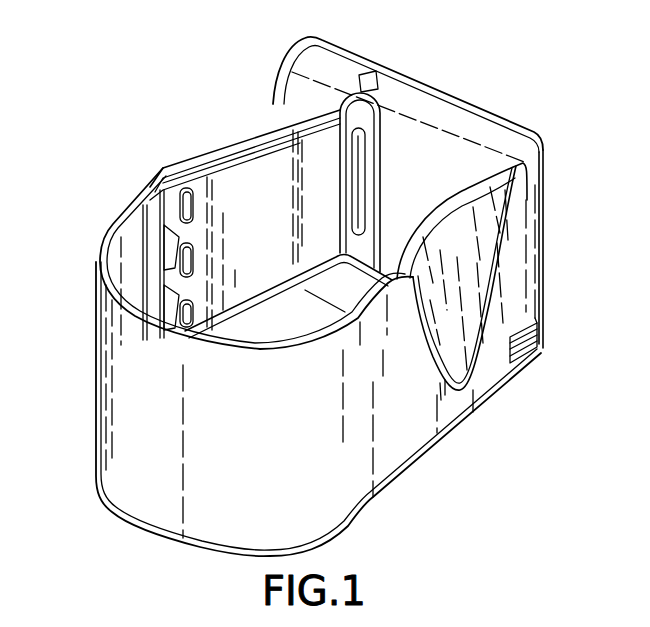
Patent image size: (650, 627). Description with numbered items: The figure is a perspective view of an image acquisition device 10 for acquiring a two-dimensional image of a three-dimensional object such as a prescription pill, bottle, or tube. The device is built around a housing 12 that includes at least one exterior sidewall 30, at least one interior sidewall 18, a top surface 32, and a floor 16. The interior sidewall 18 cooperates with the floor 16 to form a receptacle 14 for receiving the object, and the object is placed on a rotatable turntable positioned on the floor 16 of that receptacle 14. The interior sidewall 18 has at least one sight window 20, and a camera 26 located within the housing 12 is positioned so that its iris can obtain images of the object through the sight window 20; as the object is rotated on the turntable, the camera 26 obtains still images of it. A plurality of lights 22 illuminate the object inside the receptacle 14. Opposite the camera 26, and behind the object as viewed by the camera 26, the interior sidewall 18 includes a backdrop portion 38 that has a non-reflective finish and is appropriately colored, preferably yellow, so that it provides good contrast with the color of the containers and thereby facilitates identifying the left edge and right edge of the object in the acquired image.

The image acquisition device 10 is at (112, 129).
The housing 12 is at (104, 443).
The receptacle 14 is at (244, 192).
The floor 16 is at (347, 283).
The interior sidewall 18 is at (286, 147).
The sight window 20 is at (367, 150).
The lights 22 is at (157, 238).
The camera 26 is at (355, 182).
The exterior sidewall 30 is at (530, 284).
The top surface 32 is at (518, 139).
The backdrop portion 38 is at (128, 267).